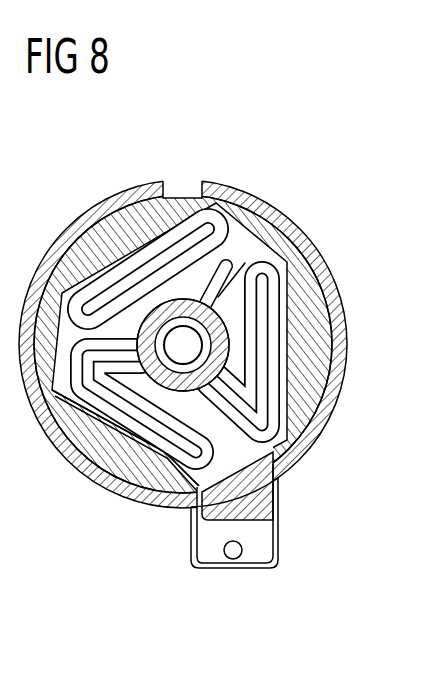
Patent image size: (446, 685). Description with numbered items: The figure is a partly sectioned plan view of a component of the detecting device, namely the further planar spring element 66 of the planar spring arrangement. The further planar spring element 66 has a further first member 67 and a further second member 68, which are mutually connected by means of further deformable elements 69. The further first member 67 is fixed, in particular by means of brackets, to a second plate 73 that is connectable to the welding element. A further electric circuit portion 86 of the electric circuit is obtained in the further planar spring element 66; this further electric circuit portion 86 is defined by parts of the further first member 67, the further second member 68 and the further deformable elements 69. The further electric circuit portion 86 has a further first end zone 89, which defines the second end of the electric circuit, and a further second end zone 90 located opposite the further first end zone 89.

The further planar spring element 66 is at (129, 222).
The further first member 67 is at (133, 432).
The further second member 68 is at (152, 302).
The further deformable elements 69 is at (170, 222).
The second plate 73 is at (320, 440).
The further electric circuit portion 86 is at (255, 164).
The further first end zone 89 is at (254, 556).
The further second end zone 90 is at (183, 350).